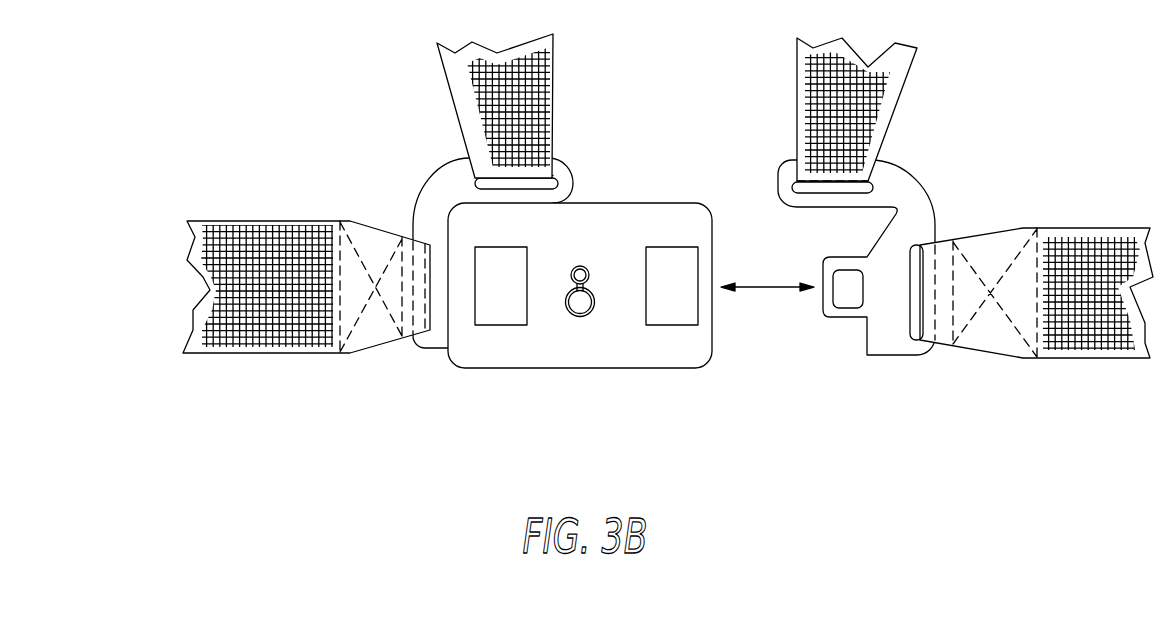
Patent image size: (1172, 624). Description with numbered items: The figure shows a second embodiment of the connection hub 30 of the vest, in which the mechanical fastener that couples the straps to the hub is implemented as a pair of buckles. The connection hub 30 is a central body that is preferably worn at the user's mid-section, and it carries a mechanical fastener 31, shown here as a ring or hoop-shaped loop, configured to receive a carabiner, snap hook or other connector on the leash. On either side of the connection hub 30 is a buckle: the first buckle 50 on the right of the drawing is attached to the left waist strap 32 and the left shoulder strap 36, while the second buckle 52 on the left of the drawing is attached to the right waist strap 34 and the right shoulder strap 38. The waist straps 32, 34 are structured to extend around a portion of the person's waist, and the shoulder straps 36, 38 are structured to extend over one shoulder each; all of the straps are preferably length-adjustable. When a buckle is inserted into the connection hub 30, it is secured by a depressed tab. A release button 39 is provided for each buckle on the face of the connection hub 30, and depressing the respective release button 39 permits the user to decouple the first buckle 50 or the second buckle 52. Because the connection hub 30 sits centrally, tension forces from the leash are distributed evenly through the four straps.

The connection hub 30 is at (462, 220).
The mechanical fastener 31 is at (592, 312).
The left waist strap 32 is at (1050, 243).
The right waist strap 34 is at (318, 240).
The left shoulder strap 36 is at (890, 82).
The right shoulder strap 38 is at (467, 87).
The release button 39 is at (489, 300).
The first buckle 50 is at (905, 343).
The second buckle 52 is at (428, 341).